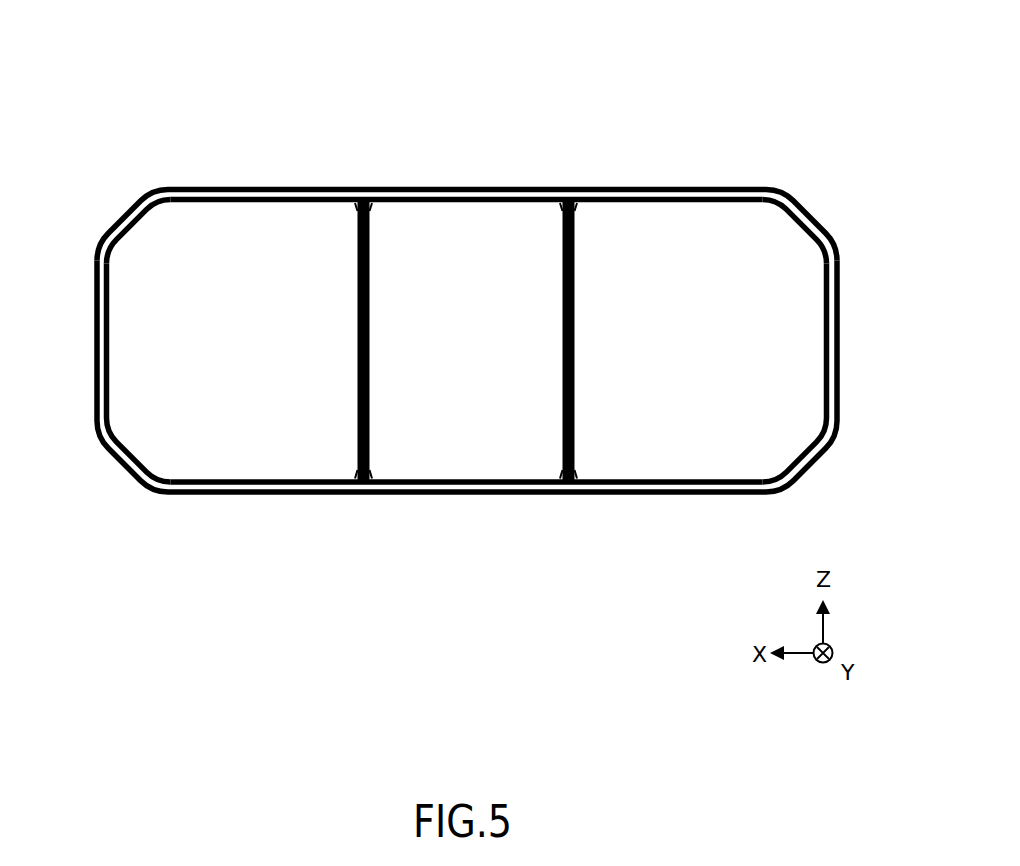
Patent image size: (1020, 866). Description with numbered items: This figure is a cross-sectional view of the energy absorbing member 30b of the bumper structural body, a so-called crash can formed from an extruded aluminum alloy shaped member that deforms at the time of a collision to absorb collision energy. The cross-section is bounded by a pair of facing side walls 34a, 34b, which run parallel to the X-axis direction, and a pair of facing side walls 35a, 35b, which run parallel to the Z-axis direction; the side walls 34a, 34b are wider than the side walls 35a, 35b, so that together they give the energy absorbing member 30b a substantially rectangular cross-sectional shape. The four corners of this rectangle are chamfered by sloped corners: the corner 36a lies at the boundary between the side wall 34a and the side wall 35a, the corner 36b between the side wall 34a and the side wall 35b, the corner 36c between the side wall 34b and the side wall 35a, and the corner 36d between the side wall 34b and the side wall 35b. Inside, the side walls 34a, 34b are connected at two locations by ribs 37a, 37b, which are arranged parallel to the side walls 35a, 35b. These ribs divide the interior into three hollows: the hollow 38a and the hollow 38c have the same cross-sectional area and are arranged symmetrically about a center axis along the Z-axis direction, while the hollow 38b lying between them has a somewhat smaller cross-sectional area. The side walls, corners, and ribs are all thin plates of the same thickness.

The energy absorbing member 30b is at (641, 74).
The side wall 34a is at (443, 187).
The side wall 34b is at (460, 496).
The side wall 35a is at (93, 365).
The side wall 35b is at (840, 365).
The corner 36a is at (120, 208).
The corner 36b is at (813, 205).
The corner 36c is at (121, 475).
The corner 36d is at (811, 474).
The rib 37a is at (356, 296).
The rib 37b is at (577, 297).
The hollow 38a is at (273, 450).
The hollow 38b is at (528, 448).
The hollow 38c is at (682, 448).